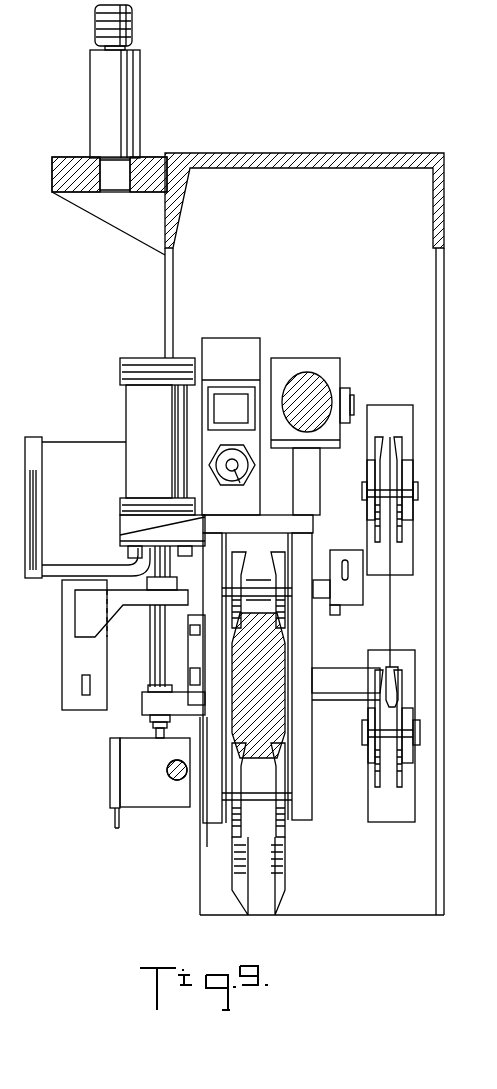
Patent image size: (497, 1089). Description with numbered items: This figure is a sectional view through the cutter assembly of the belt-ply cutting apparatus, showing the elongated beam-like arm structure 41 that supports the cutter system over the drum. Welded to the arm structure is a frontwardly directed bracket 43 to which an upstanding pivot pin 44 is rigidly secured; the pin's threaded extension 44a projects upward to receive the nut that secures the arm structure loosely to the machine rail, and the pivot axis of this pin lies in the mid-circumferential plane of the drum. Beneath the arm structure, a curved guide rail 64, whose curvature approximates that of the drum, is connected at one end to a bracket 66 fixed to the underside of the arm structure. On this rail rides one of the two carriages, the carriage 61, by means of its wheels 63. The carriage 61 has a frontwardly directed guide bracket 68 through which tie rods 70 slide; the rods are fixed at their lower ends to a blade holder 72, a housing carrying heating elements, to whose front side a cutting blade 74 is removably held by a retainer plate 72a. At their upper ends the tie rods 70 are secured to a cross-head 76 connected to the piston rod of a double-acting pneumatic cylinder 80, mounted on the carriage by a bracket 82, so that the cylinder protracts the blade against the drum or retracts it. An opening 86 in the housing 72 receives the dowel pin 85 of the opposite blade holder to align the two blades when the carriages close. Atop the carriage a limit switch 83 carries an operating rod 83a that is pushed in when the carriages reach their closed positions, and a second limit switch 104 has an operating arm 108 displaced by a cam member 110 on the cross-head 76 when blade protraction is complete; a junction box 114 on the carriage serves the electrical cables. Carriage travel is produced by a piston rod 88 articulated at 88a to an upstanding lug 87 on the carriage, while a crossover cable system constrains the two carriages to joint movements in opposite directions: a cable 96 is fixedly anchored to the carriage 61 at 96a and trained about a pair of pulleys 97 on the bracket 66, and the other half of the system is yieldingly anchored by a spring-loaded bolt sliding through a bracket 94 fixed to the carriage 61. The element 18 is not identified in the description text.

The conduit 18 is at (120, 565).
The arm structure 41 is at (312, 155).
The bracket 43 is at (62, 160).
The pivot pin 44 is at (142, 101).
The threaded extension 44a is at (133, 20).
The carriage 61 is at (315, 818).
The wheels 63 is at (262, 567).
The guide rail 64 is at (282, 736).
The bracket 66 is at (368, 905).
The guide bracket 68 is at (147, 695).
The tie rods 70 is at (150, 634).
The blade holder 72 is at (150, 805).
The retainer plate 72a is at (112, 752).
The cutting blade 74 is at (113, 824).
The cross-head 76 is at (186, 592).
The pneumatic cylinder 80 is at (130, 400).
The bracket 82 is at (120, 540).
The limit switch 83 is at (248, 340).
The operating rod 83a is at (232, 478).
The guide pin 85 is at (172, 775).
The opening 86 is at (172, 764).
The lug 87 is at (320, 490).
The piston rod 88 is at (310, 375).
The articulation 88a is at (352, 395).
The bracket 94 is at (345, 607).
The cable 96 is at (392, 632).
The anchor point 96a is at (398, 685).
The pulleys 97 is at (402, 435).
The limit switch 104 is at (68, 654).
The operating arm 108 is at (82, 686).
The cam member 110 is at (82, 628).
The junction box 114 is at (60, 452).